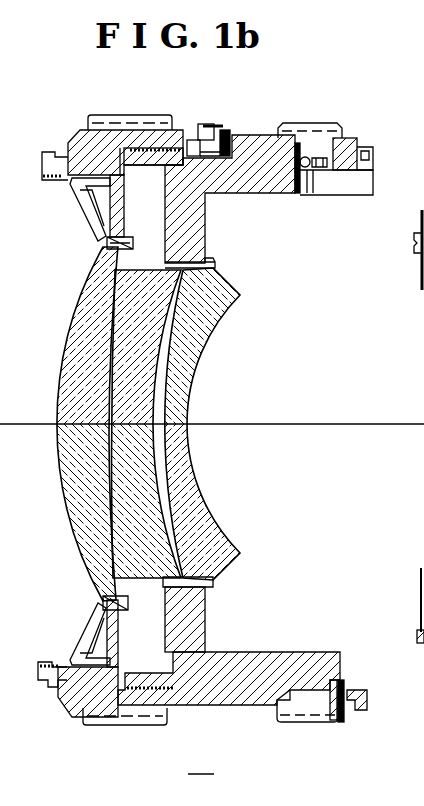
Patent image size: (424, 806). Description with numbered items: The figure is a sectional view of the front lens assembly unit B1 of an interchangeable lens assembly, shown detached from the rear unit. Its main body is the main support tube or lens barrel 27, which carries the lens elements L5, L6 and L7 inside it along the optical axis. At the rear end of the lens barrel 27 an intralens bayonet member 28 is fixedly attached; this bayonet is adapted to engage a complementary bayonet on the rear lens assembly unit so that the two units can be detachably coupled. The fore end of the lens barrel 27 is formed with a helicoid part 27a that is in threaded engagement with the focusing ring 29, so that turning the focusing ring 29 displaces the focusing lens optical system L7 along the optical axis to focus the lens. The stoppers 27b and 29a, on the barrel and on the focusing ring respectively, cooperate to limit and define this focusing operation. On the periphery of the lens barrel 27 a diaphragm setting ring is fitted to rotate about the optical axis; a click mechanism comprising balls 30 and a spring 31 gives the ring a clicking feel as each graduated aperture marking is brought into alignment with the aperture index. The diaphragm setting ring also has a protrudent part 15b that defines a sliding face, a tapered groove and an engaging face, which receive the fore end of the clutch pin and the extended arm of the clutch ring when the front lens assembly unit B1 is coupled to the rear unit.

The focusing ring 29 is at (82, 142).
The stopper 29a is at (200, 128).
The stopper 27b is at (221, 135).
The main support tube or lens barrel 27 is at (268, 150).
The helicoid part 27a is at (144, 153).
The intralens bayonet member 28 is at (374, 157).
The balls 30 is at (300, 175).
The spring 31 is at (320, 170).
The protrudent part 15b is at (343, 190).
The lens L5 is at (197, 328).
The lens L6 is at (138, 400).
The focusing lens optical system L7 is at (82, 336).
The front lens assembly unit B1 is at (205, 761).